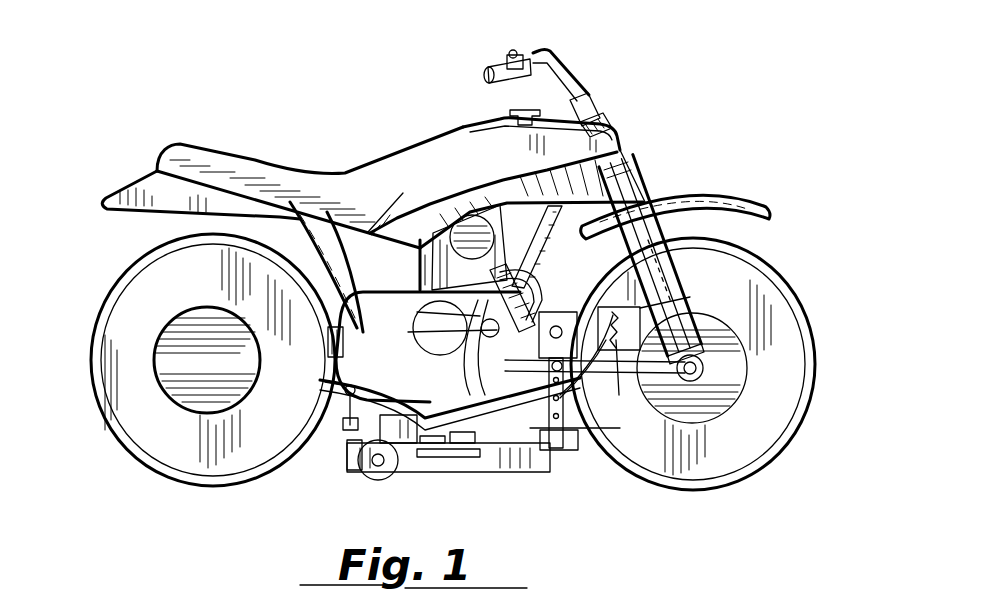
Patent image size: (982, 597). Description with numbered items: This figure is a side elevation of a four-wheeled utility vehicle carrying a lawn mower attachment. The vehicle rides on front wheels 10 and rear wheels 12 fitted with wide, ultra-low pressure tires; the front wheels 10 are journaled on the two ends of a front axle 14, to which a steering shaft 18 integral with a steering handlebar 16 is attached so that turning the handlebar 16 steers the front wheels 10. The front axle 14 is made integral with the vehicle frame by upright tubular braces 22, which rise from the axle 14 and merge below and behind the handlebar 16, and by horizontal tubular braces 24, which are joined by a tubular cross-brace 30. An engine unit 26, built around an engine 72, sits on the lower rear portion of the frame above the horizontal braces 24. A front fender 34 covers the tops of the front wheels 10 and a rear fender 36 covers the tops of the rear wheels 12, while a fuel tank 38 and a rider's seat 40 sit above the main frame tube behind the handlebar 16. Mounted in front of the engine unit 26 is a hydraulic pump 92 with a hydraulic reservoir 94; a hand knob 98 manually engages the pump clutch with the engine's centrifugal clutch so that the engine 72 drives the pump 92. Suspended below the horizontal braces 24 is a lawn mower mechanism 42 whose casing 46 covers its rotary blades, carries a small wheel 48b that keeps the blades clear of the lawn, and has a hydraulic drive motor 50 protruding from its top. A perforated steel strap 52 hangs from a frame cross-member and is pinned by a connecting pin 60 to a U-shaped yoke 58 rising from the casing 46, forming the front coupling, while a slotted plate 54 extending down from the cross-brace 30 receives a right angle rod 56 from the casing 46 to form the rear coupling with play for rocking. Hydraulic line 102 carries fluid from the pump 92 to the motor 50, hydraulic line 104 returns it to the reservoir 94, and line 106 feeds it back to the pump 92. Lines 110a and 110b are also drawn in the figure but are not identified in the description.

The front wheels 10 is at (800, 312).
The rear wheels 12 is at (120, 283).
The front axle 14 is at (703, 368).
The steering handlebar 16 is at (564, 75).
The steering shaft 18 is at (650, 227).
The upright tubular braces 22 is at (650, 285).
The horizontal tubular braces 24 is at (670, 387).
The engine unit 26 is at (420, 270).
The tubular cross-brace 30 is at (343, 387).
The front fender 34 is at (727, 202).
The rear fender 36 is at (142, 172).
The fuel tank 38 is at (480, 118).
The rider's seat 40 is at (257, 150).
The lawn mower mechanism 42 is at (507, 481).
The casing 46 is at (453, 473).
The small wheel 48b is at (370, 477).
The hydraulic drive motor 50 is at (405, 437).
The steel strap 52 is at (557, 447).
The slotted plate 54 is at (350, 403).
The right angle rod 56 is at (340, 422).
The U-shaped yoke 58 is at (567, 437).
The connecting pin 60 is at (590, 432).
The engine 72 is at (512, 205).
The hydraulic pump 92 is at (556, 313).
The hydraulic reservoir 94 is at (703, 317).
The hand knob 98 is at (480, 317).
The hydraulic line 102 is at (437, 410).
The hydraulic line 104 is at (508, 420).
The hydraulic line 106 is at (584, 330).
The cable line 110a is at (508, 358).
The cable line 110b is at (550, 313).